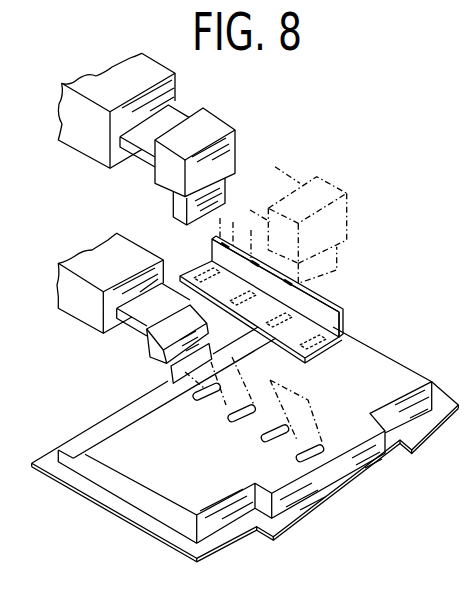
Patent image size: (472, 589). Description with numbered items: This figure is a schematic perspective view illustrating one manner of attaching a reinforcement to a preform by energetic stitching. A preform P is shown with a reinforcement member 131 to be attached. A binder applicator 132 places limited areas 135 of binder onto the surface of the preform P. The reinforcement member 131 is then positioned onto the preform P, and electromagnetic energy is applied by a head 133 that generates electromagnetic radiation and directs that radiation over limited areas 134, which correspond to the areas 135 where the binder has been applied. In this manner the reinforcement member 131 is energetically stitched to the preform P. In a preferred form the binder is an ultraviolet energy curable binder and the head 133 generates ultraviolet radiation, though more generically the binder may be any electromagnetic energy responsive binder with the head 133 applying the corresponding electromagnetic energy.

The reinforcement member 131 is at (338, 318).
The binder applicator 132 is at (149, 343).
The head 133 is at (235, 142).
The limited areas 134 is at (352, 347).
The limited areas of binder 135 is at (321, 446).
The preform P is at (320, 480).